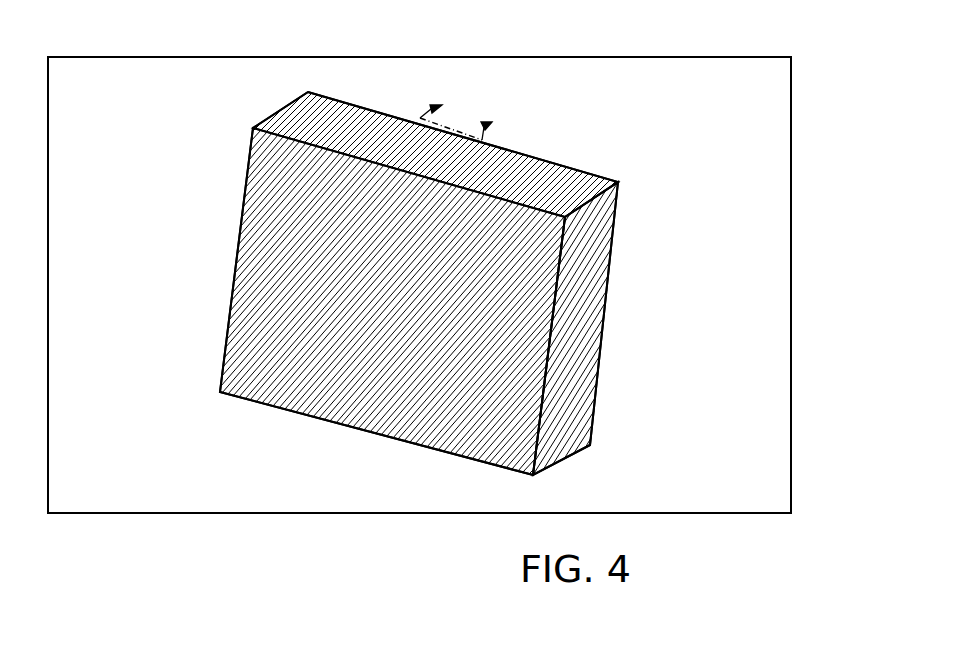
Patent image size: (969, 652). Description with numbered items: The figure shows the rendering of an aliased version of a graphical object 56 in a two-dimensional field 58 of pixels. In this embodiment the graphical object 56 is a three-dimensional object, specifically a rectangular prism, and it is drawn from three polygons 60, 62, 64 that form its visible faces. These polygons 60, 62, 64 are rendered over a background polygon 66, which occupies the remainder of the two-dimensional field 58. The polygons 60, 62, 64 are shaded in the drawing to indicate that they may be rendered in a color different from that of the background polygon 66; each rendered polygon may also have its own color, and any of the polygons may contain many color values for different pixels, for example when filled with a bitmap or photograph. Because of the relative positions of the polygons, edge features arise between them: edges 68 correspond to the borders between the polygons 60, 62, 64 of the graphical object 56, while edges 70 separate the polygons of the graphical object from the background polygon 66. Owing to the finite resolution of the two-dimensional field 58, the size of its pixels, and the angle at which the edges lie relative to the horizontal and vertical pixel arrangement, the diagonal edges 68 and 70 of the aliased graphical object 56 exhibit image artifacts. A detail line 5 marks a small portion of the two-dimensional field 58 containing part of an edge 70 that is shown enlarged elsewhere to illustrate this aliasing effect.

The graphical object 56 is at (363, 432).
The two-dimensional field 58 is at (256, 57).
The polygon 60 is at (230, 310).
The polygon 62 is at (598, 270).
The polygon 64 is at (574, 170).
The background polygon 66 is at (573, 66).
The edges 68 is at (514, 150).
The edges 70 is at (263, 122).
The detail line 5 is at (466, 109).